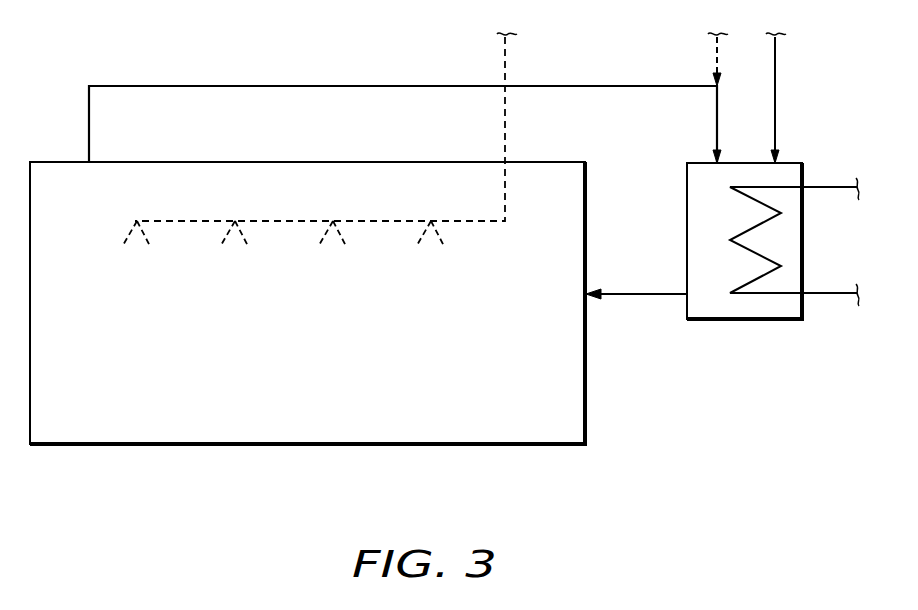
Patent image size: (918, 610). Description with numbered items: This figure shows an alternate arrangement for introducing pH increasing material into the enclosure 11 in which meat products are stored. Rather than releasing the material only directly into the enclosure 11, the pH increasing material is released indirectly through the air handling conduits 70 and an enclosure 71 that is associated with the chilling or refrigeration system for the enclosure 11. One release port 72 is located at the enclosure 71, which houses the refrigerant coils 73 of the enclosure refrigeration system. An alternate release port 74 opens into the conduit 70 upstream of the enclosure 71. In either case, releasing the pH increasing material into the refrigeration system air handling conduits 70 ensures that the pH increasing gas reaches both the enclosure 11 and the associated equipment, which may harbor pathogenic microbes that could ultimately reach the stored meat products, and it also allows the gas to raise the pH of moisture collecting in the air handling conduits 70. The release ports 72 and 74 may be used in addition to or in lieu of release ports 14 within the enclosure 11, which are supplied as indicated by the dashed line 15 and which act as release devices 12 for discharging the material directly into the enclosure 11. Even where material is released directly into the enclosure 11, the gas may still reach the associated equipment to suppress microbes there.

The enclosure 11 is at (70, 197).
The release device 12 is at (290, 316).
The release ports 14 is at (333, 228).
The dashed line 15 is at (507, 212).
The air handling conduits 70 is at (272, 86).
The enclosure housing refrigerant coils 71 is at (692, 163).
The release port 72 is at (781, 163).
The refrigerant coils 73 is at (760, 294).
The alternate release port 74 is at (714, 84).